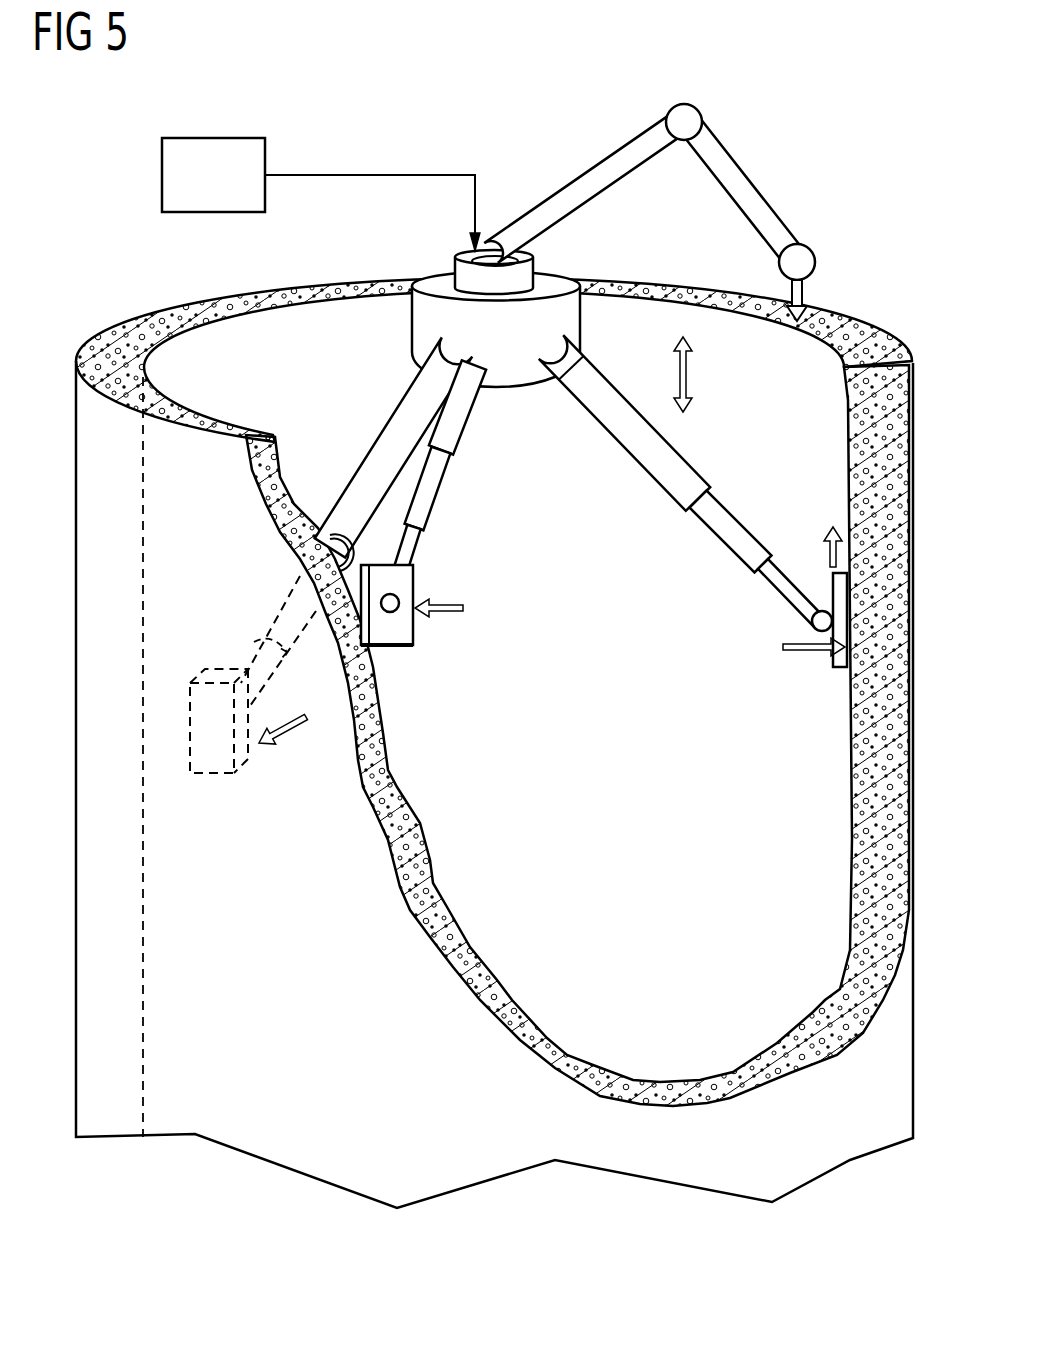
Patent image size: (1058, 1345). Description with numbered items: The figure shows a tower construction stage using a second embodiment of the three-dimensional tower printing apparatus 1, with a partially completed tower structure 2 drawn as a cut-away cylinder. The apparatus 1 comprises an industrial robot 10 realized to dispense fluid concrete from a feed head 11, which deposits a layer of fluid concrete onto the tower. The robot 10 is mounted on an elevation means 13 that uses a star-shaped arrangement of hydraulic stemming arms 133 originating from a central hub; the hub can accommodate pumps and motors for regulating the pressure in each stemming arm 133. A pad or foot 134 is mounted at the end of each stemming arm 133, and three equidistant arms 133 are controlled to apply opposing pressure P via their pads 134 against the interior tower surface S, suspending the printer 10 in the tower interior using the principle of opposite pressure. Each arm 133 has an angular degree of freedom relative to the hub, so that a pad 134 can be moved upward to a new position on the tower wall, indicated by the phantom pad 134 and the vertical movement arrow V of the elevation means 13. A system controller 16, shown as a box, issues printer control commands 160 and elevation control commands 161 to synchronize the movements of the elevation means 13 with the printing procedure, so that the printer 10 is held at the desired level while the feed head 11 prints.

The 3D tower printing apparatus 1 is at (471, 635).
The tower structure 2 is at (90, 489).
The industrial robot 10 is at (593, 183).
The feed head 11 is at (805, 293).
The elevation means 13 is at (398, 340).
The system controller 16 is at (210, 138).
The stemming arm 133 is at (383, 456).
The pad 134 is at (400, 633).
The printer control commands 160 is at (372, 177).
The elevation control commands 161 is at (353, 175).
The tower surface S is at (211, 352).
The opposing pressure P is at (463, 613).
The vertical movement direction V is at (690, 372).